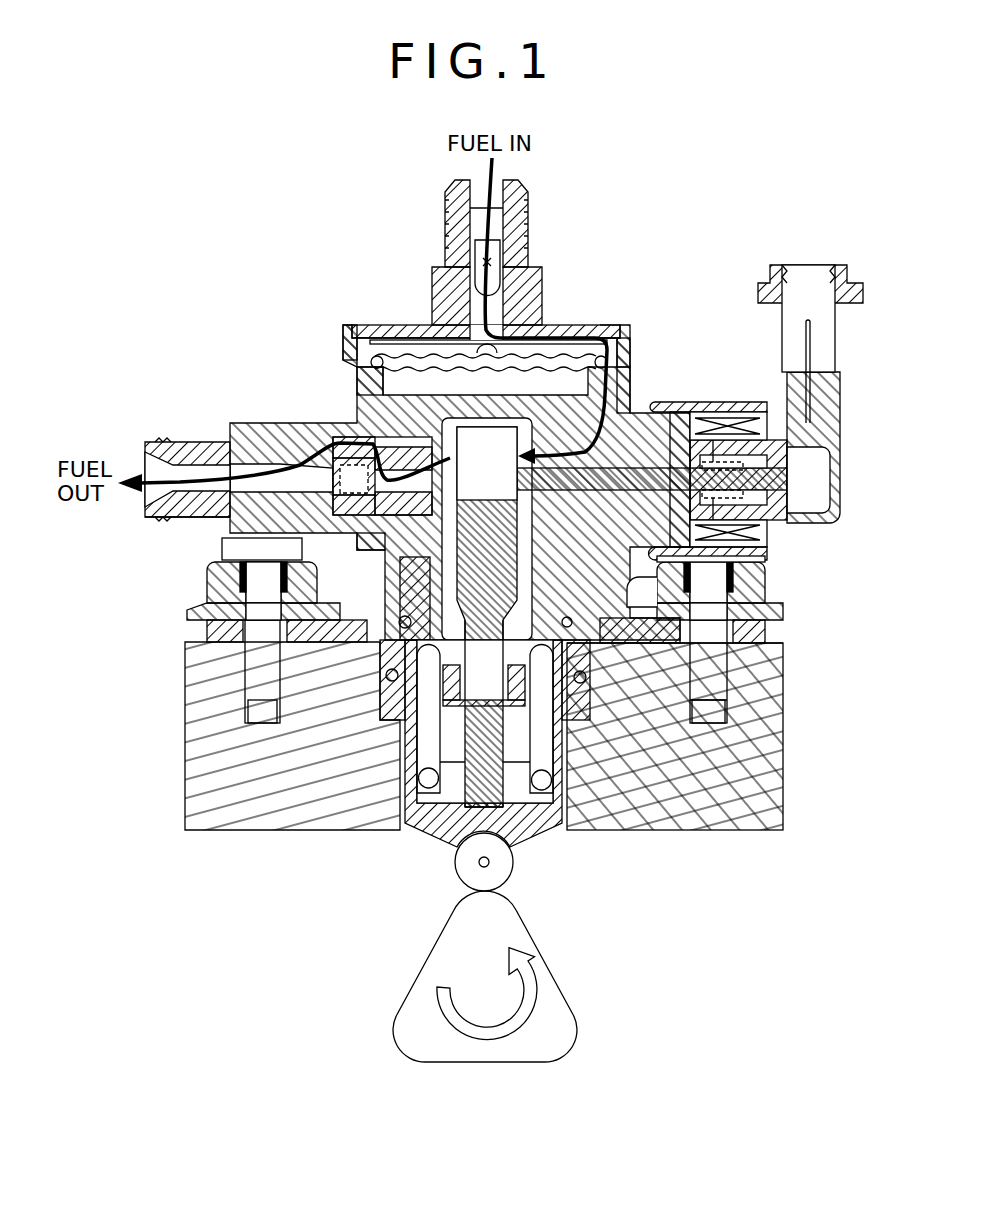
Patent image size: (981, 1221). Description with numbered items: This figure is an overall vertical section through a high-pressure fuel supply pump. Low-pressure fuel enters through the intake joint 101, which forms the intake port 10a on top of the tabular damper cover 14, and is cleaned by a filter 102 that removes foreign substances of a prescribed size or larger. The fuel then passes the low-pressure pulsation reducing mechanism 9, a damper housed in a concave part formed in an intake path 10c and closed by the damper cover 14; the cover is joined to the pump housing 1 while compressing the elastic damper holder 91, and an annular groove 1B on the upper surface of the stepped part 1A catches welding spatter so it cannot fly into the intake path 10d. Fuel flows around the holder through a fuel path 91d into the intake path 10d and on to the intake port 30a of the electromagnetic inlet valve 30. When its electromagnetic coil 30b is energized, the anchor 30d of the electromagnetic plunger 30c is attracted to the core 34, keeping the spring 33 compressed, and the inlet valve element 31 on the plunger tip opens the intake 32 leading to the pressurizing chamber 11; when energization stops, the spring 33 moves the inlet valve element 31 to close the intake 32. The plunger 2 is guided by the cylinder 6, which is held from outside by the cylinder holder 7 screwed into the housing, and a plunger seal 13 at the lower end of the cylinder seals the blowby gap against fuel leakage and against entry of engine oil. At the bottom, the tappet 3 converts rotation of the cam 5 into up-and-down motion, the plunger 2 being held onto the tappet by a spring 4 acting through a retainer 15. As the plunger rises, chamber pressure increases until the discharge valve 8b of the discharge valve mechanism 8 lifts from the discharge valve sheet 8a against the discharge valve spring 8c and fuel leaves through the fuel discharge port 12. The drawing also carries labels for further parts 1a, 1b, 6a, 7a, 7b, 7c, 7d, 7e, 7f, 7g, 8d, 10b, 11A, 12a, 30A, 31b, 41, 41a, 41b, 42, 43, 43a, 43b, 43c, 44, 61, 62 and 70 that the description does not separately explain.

The pump housing 1 is at (350, 360).
The stepped part 1A is at (380, 386).
The annular groove 1B is at (487, 529).
The body flange 1a is at (700, 745).
The lower body portion 1b is at (365, 600).
The plunger 2 is at (435, 843).
The tappet 3 is at (512, 850).
The spring 4 is at (548, 838).
The cam 5 is at (535, 1020).
The cylinder 6 is at (750, 790).
The mounting surface 6a is at (760, 705).
The cylinder holder 7 is at (560, 790).
The bolt head 7a is at (225, 583).
The bolt shank end 7b is at (262, 725).
The spring seat 7c is at (440, 665).
The spring retainer 7d is at (450, 695).
The seal ring 7e is at (590, 700).
The seal ring 7f is at (390, 680).
The bolt flange 7g is at (205, 612).
The discharge valve mechanism 8 is at (305, 372).
The discharge valve sheet 8a is at (400, 450).
The discharge valve 8b is at (360, 496).
The discharge valve spring 8c is at (340, 462).
The valve spring 8d is at (334, 445).
The low-pressure pulsation reducing mechanism 9 is at (462, 354).
The intake port 10a is at (455, 190).
The inlet fitting portion 10b is at (522, 325).
The intake path 10c is at (540, 336).
The intake path 10d is at (602, 410).
The pressurizing chamber 11 is at (410, 362).
The holder 11A is at (262, 554).
The fuel discharge port 12 is at (173, 487).
The discharge fitting flange 12a is at (175, 518).
The plunger seal 13 is at (455, 760).
The damper cover 14 is at (352, 345).
The retainer 15 is at (425, 790).
The electromagnetic inlet valve 30 is at (745, 398).
The relief valve mount wall 30A is at (618, 352).
The intake port 30a is at (668, 406).
The electromagnetic coil 30b is at (714, 430).
The electromagnetic plunger 30c is at (760, 458).
The anchor 30d is at (760, 500).
The inlet valve element 31 is at (487, 463).
The valve rod 31b is at (790, 478).
The intake 32 is at (487, 617).
The spring 33 is at (743, 423).
The core 34 is at (639, 591).
The fixing bolt 41 is at (722, 690).
The bolt tip 41a is at (715, 830).
The bolt shank step 41b is at (728, 720).
The washer 42 is at (762, 565).
The bolt head 43 is at (766, 606).
The bolt flange 43a is at (770, 625).
The flange block 43b is at (740, 645).
The seal strip 43c is at (745, 592).
The seal strip 44 is at (750, 580).
The spring housing 61 is at (388, 740).
The spring housing upper 62 is at (386, 652).
The spring housing right 70 is at (578, 720).
The damper holder 91 is at (370, 330).
The fuel path 91d is at (598, 330).
The intake joint 101 is at (522, 264).
The filter 102 is at (500, 220).